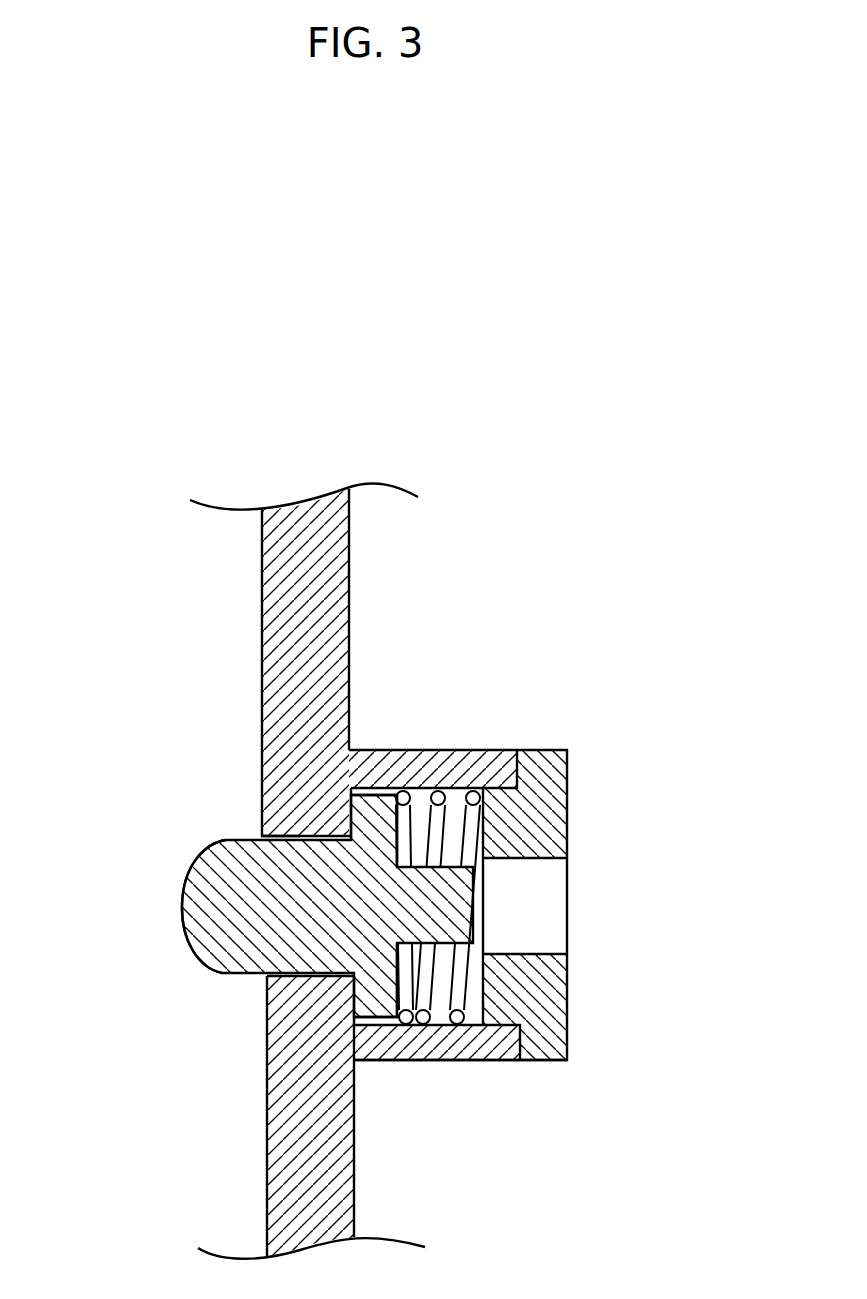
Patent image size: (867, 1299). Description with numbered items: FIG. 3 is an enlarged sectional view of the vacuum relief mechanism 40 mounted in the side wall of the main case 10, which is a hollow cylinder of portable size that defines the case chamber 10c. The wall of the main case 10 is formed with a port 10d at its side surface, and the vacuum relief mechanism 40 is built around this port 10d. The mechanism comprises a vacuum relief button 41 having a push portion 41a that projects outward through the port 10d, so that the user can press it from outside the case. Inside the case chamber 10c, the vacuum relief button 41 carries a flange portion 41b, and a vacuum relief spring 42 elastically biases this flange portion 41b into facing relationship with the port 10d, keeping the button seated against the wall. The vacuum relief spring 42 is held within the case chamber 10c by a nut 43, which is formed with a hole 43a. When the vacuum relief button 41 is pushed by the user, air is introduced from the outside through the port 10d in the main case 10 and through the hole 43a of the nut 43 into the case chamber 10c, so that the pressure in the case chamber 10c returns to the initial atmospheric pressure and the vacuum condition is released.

The main case 10 is at (303, 662).
The case chamber 10c is at (560, 1174).
The port 10d is at (257, 828).
The vacuum relief mechanism 40 is at (415, 828).
The vacuum relief button 41 is at (215, 988).
The push portion 41a is at (187, 930).
The flange portion 41b is at (366, 822).
The vacuum relief spring 42 is at (477, 817).
The nut 43 is at (530, 829).
The hole 43a is at (518, 933).